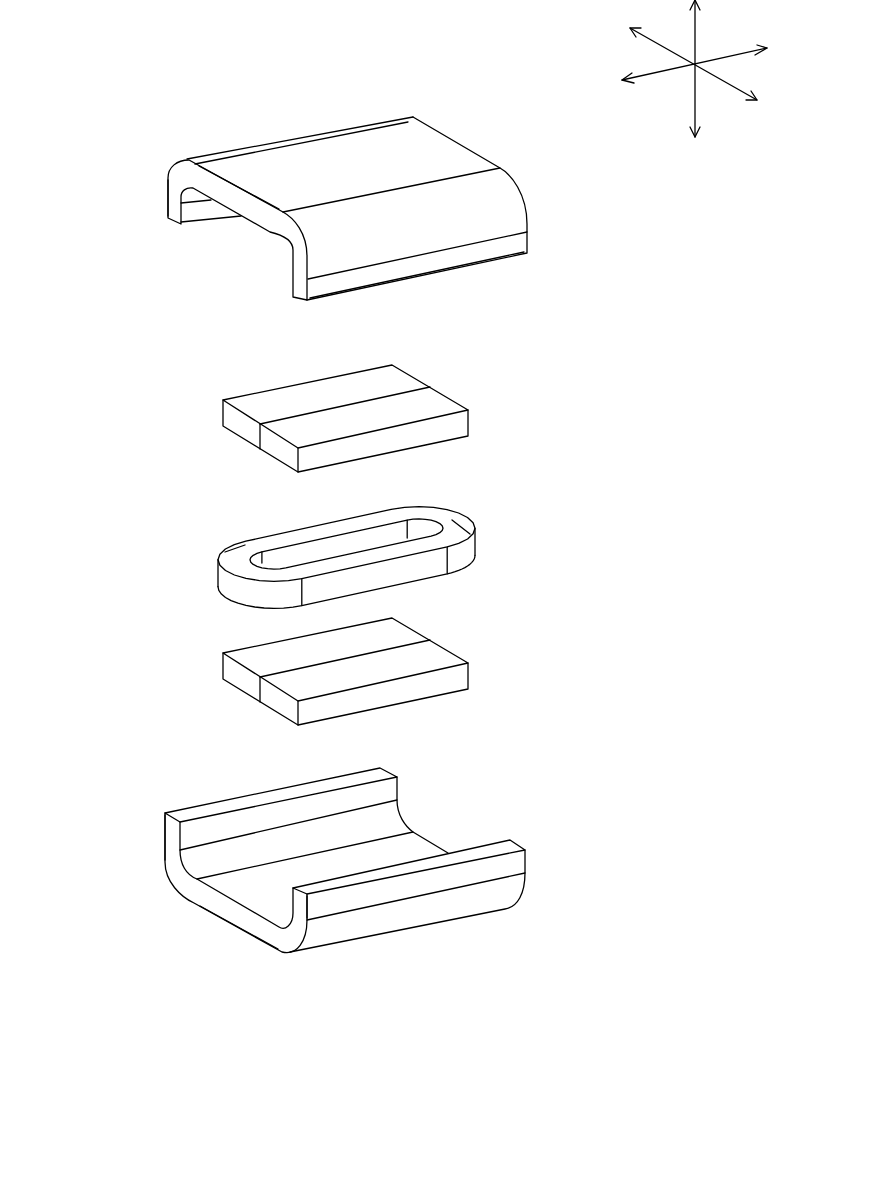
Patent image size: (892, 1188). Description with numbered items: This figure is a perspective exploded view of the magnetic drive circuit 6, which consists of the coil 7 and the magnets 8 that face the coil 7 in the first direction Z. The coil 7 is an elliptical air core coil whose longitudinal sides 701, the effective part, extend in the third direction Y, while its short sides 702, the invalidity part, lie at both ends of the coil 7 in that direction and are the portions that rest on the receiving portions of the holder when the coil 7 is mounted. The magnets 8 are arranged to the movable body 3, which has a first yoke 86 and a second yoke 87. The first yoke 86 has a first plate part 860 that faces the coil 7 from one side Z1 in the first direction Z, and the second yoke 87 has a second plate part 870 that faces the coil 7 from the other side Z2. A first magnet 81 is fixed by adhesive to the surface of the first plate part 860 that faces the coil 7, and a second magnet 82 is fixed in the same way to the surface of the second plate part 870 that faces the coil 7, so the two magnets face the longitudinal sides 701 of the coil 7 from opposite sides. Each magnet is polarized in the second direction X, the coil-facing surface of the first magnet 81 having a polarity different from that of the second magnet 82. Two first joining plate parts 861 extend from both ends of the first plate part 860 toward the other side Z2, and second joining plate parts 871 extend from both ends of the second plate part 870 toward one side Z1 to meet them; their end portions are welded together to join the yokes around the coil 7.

The magnetic drive circuit 6 is at (150, 120).
The movable body 3 is at (330, 543).
The first yoke 86 is at (397, 121).
The first plate part 860 is at (250, 203).
The first joining plate parts 861 is at (163, 195).
The magnets 8 is at (406, 538).
The first magnet 81 is at (440, 397).
The second magnet 82 is at (446, 658).
The coil 7 is at (460, 521).
The longitudinal side 701 is at (342, 528).
The short sides 702 is at (232, 556).
The second yoke 87 is at (337, 945).
The second plate part 870 is at (220, 920).
The second joining plate parts 871 is at (162, 834).